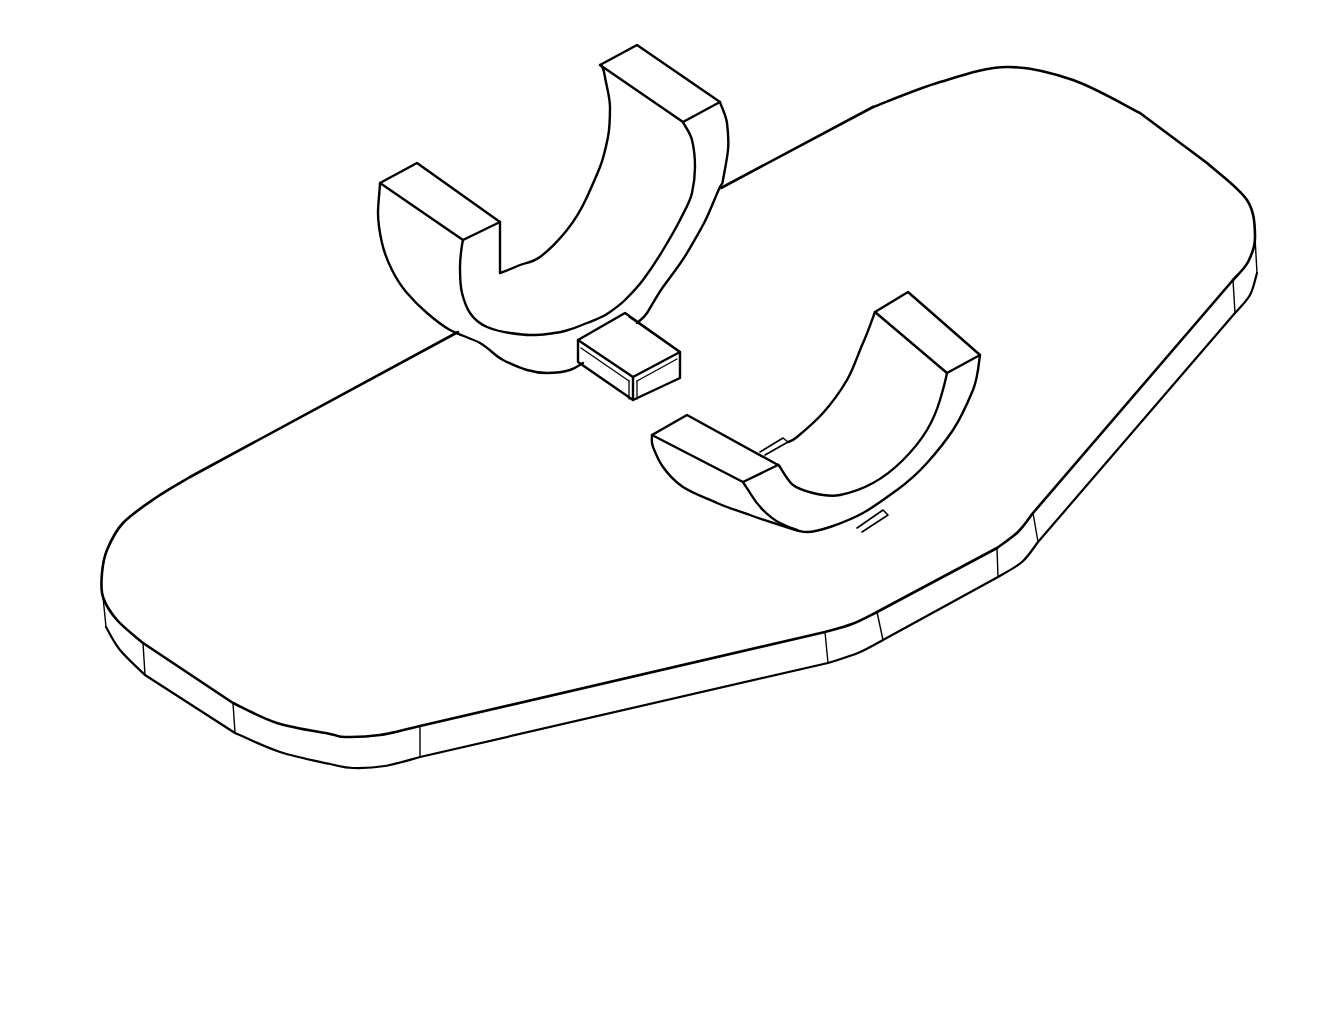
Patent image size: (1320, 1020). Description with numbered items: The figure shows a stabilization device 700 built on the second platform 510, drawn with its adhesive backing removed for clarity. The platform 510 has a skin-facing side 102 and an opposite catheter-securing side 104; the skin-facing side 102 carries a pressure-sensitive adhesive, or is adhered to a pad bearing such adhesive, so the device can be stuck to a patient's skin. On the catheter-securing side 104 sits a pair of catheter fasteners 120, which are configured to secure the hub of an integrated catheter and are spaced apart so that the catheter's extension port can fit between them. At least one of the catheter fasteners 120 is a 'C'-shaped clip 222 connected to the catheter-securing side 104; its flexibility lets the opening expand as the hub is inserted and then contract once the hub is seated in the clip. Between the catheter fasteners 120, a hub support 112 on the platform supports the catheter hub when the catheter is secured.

The stabilization device 700 is at (183, 177).
The skin-facing side 102 is at (401, 769).
The catheter-securing side 104 is at (286, 416).
The second platform 510 is at (1118, 167).
The catheter fasteners 120 is at (533, 357).
The 'C'-shaped clip 222 is at (390, 240).
The hub support 112 is at (655, 347).